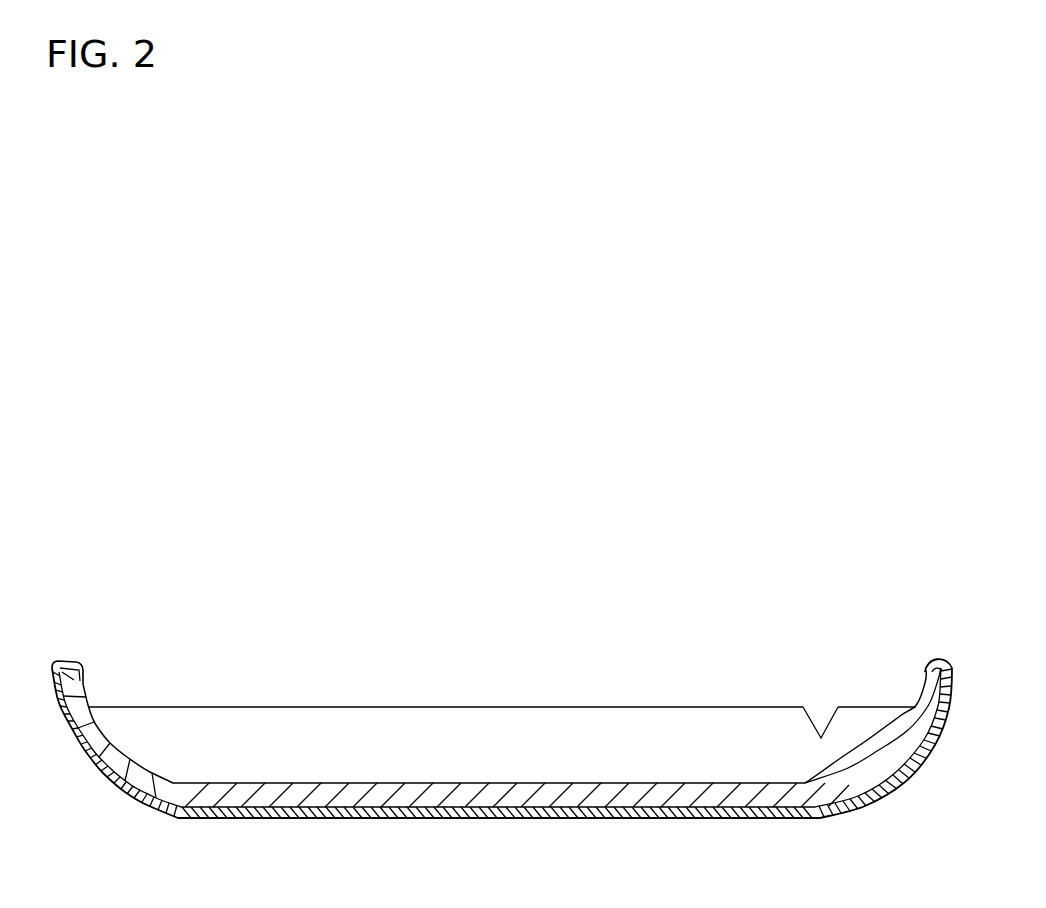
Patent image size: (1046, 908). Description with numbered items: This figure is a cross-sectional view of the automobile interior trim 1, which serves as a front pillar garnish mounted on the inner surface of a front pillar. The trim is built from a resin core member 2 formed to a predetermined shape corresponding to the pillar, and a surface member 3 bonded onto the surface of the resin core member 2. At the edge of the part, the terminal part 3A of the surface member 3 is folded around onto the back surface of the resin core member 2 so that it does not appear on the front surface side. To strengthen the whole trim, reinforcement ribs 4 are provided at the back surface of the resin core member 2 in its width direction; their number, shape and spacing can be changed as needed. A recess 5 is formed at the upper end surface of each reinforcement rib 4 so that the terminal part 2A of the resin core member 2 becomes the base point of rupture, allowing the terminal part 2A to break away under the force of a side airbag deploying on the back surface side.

The automobile interior trim 1 is at (238, 648).
The resin core member 2 is at (751, 809).
The terminal part of the resin core member 2A is at (937, 664).
The surface member 3 is at (689, 820).
The terminal part of the surface member 3A is at (921, 680).
The reinforcement ribs 4 is at (638, 706).
The recess 5 is at (819, 717).